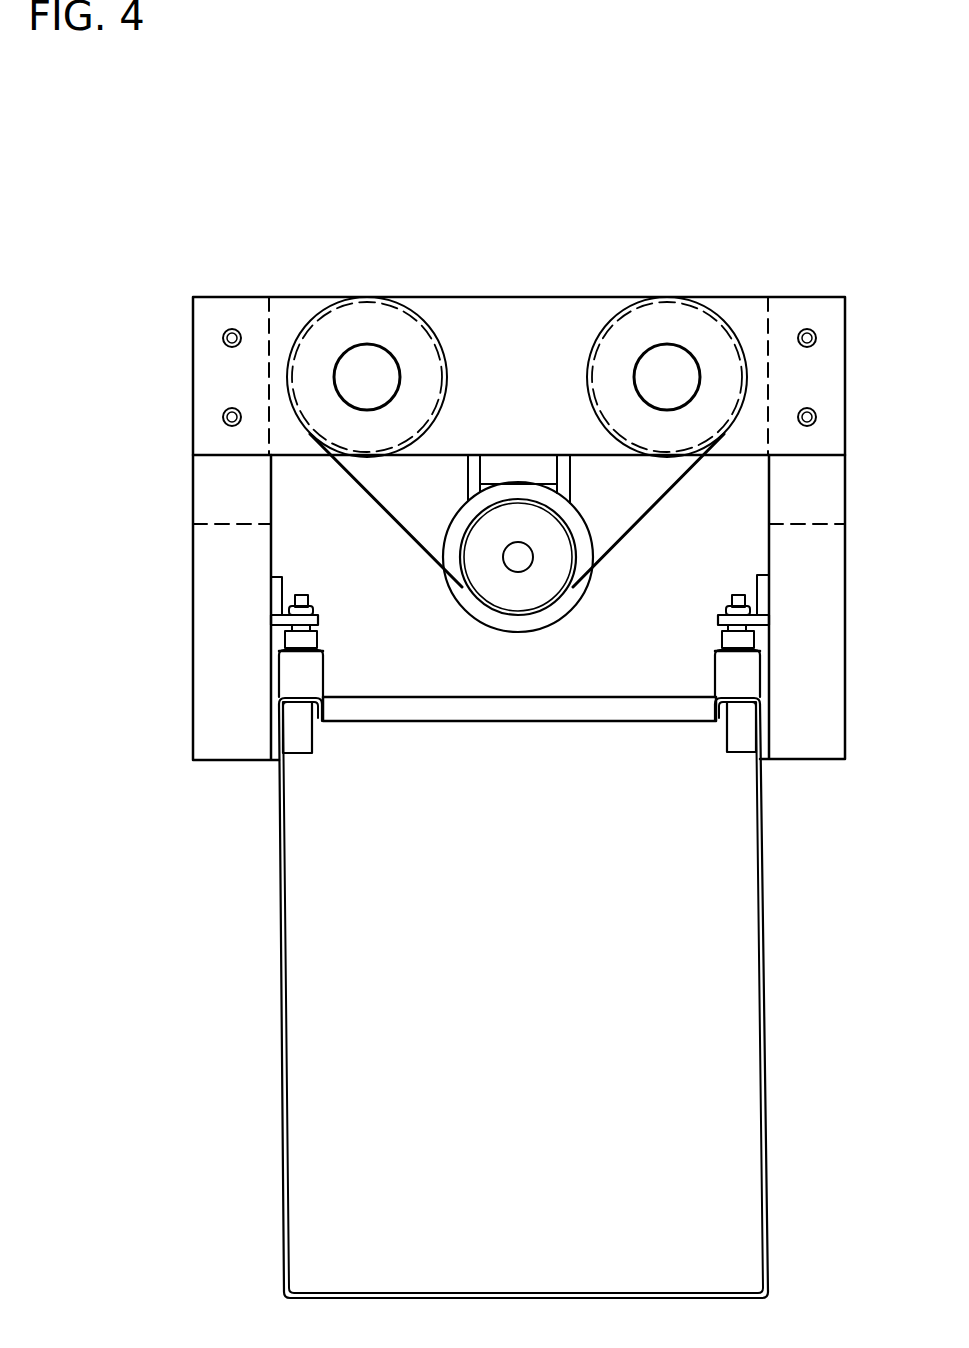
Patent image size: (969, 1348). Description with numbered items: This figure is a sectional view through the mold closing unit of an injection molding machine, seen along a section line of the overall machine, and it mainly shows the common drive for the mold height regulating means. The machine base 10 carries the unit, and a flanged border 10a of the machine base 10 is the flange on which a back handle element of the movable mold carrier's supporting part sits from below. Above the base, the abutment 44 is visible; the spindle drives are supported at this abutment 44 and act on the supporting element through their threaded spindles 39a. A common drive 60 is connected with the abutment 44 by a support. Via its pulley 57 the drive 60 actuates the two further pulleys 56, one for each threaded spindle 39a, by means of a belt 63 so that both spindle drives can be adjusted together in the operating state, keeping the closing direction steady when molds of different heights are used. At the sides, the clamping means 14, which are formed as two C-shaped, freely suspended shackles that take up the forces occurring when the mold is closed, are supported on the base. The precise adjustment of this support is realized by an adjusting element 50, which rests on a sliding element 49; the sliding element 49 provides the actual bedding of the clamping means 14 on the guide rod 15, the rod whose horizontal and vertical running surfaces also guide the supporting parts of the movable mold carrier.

The machine base 10 is at (477, 862).
The flanged border 10a is at (543, 707).
The clamping means 14 is at (217, 545).
The guide rod 15 is at (305, 678).
The threaded spindle 39a is at (517, 309).
The abutment 44 is at (516, 389).
The sliding element 49 is at (308, 643).
The adjusting element 50 is at (300, 595).
The pulley 56 is at (517, 332).
The pulley 57 is at (522, 602).
The drive 60 is at (582, 552).
The belt 63 is at (395, 522).